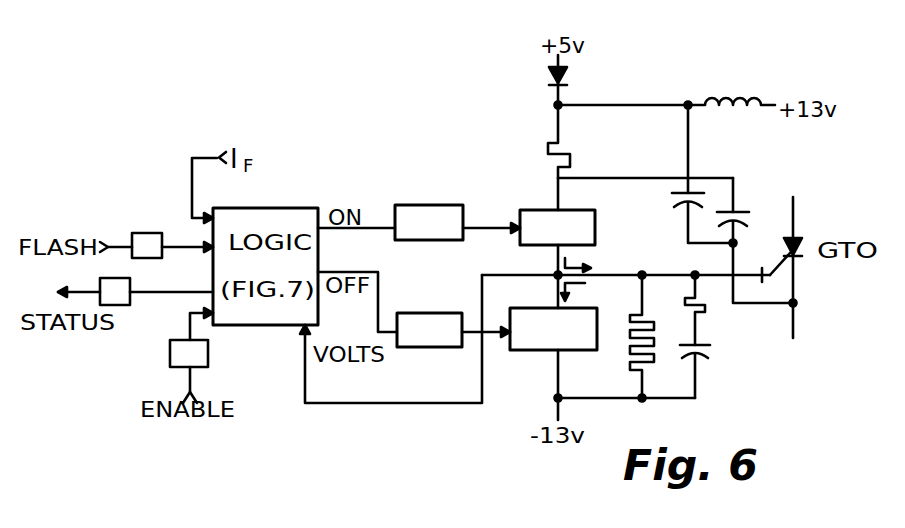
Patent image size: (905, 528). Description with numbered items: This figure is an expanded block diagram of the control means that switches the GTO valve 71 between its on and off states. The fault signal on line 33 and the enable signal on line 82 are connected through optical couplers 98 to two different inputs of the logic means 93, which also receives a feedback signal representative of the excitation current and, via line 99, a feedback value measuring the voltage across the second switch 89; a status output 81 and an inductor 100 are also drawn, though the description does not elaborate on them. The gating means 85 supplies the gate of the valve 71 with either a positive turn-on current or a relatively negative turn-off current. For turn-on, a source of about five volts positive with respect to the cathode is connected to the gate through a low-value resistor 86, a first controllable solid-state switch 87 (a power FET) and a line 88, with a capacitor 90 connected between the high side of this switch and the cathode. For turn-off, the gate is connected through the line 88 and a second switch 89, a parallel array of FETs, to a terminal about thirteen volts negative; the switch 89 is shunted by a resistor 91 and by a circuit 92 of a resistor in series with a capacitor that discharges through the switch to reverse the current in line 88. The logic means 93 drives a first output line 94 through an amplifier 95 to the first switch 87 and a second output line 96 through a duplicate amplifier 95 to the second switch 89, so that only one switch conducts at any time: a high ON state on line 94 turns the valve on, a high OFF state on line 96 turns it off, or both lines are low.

The line 33 is at (115, 247).
The optical couplers 98 is at (152, 233).
The status output line 81 is at (82, 292).
The line 82 is at (190, 382).
The logic means 93 is at (268, 208).
The first output line 94 is at (380, 228).
The amplifier 95 is at (455, 205).
The second output line 96 is at (378, 308).
The line 99 is at (378, 403).
The gating means 85 is at (505, 167).
The resistor 86 is at (568, 149).
The first controllable solid-state switch 87 is at (595, 222).
The line 88 is at (640, 275).
The second controllable solid-state switch 89 is at (540, 350).
The capacitor 90 is at (745, 215).
The resistor 91 is at (632, 352).
The circuit 92 is at (705, 336).
The inductor 100 is at (726, 97).
The GTO valve 71 is at (800, 240).